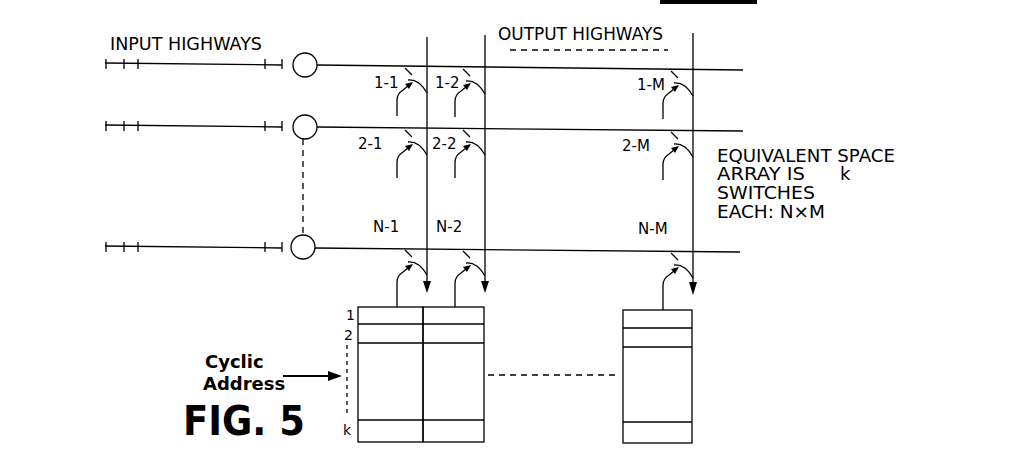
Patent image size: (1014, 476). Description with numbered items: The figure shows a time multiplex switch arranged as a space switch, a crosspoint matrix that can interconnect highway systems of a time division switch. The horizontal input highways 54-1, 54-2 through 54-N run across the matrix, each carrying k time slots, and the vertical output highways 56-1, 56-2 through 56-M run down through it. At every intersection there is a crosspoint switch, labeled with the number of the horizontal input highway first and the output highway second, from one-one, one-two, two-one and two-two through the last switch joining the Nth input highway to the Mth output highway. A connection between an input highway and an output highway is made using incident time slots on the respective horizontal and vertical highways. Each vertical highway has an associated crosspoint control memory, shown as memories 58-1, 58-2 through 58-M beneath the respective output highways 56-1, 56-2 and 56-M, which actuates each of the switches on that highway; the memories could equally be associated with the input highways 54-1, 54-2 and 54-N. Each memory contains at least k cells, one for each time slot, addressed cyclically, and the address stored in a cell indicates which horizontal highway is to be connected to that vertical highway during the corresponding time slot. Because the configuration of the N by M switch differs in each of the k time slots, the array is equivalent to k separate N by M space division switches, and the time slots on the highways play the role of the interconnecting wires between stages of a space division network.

The horizontal input highway 54-1 is at (106, 64).
The horizontal input highway 54-2 is at (106, 125).
The horizontal input highway 54-N is at (106, 246).
The vertical output highway 56-1 is at (427, 42).
The vertical output highway 56-2 is at (485, 45).
The vertical output highway 56-M is at (693, 45).
The crosspoint control memory 58-1 is at (416, 382).
The crosspoint control memory 58-2 is at (474, 382).
The crosspoint control memory 58-M is at (680, 388).